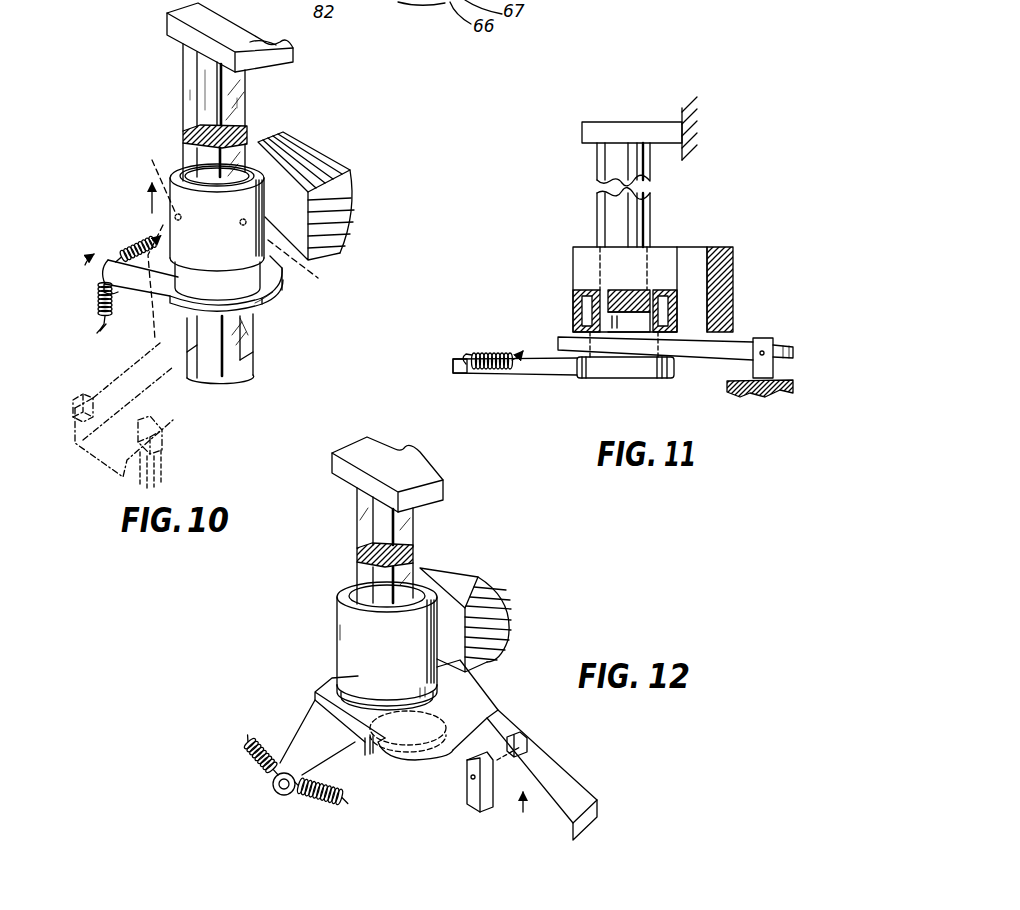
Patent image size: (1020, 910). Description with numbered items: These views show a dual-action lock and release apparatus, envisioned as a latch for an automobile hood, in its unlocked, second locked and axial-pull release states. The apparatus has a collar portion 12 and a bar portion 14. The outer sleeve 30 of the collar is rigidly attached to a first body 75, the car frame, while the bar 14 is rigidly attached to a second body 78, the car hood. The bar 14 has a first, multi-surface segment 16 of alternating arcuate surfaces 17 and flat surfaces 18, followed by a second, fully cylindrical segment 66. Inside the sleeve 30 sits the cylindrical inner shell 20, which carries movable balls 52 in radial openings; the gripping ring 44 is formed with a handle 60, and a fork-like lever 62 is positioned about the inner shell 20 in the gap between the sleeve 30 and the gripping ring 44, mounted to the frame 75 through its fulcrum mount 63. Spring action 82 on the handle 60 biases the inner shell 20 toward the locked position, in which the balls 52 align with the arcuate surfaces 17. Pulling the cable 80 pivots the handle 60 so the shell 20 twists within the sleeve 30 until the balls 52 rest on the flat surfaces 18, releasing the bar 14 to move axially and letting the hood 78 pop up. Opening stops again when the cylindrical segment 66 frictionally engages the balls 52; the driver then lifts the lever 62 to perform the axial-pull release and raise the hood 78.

In FIG. 10, the collar portion 12 is at (285, 285).
In FIG. 11, the collar portion 12 is at (668, 247).
In FIG. 12, the collar portion 12 is at (332, 622).
In FIG. 10, the bar portion 14 is at (262, 133).
In FIG. 11, the bar portion 14 is at (598, 212).
In FIG. 12, the bar portion 14 is at (422, 551).
In FIG. 10, the multi-surface segment 16 is at (243, 339).
In FIG. 11, the multi-surface segment 16 is at (597, 232).
In FIG. 10, the arcuate surfaces 17 is at (205, 80).
In FIG. 10, the flat surfaces 18 is at (190, 98).
In FIG. 10, the inner shell 20 is at (276, 296).
In FIG. 12, the inner shell 20 is at (385, 693).
In FIG. 10, the outer sleeve 30 is at (255, 200).
In FIG. 12, the outer sleeve 30 is at (340, 652).
In FIG. 11, the gripping ring 44 is at (653, 380).
In FIG. 12, the gripping ring 44 is at (385, 748).
In FIG. 10, the movable ball 52 is at (236, 238).
In FIG. 11, the movable ball 52 is at (602, 292).
In FIG. 10, the handle 60 is at (130, 273).
In FIG. 11, the handle 60 is at (515, 381).
In FIG. 12, the handle 60 is at (312, 757).
In FIG. 10, the lever 62 is at (183, 367).
In FIG. 11, the lever 62 is at (706, 352).
In FIG. 12, the lever 62 is at (530, 775).
In FIG. 10, the fulcrum mount 63 is at (163, 432).
In FIG. 11, the fulcrum mount 63 is at (764, 338).
In FIG. 12, the fulcrum mount 63 is at (520, 740).
In FIG. 10, the mono-surface segment 66 is at (246, 376).
In FIG. 11, the mono-surface segment 66 is at (618, 303).
In FIG. 10, the first body 75 is at (352, 193).
In FIG. 11, the first body 75 is at (700, 250).
In FIG. 12, the first body 75 is at (478, 625).
In FIG. 10, the second body 78 is at (270, 48).
In FIG. 11, the second body 78 is at (662, 128).
In FIG. 12, the second body 78 is at (410, 480).
In FIG. 10, the cable 80 is at (125, 248).
In FIG. 10, the spring action 82 is at (98, 290).
In FIG. 11, the spring action 82 is at (478, 371).
In FIG. 12, the spring action 82 is at (295, 770).